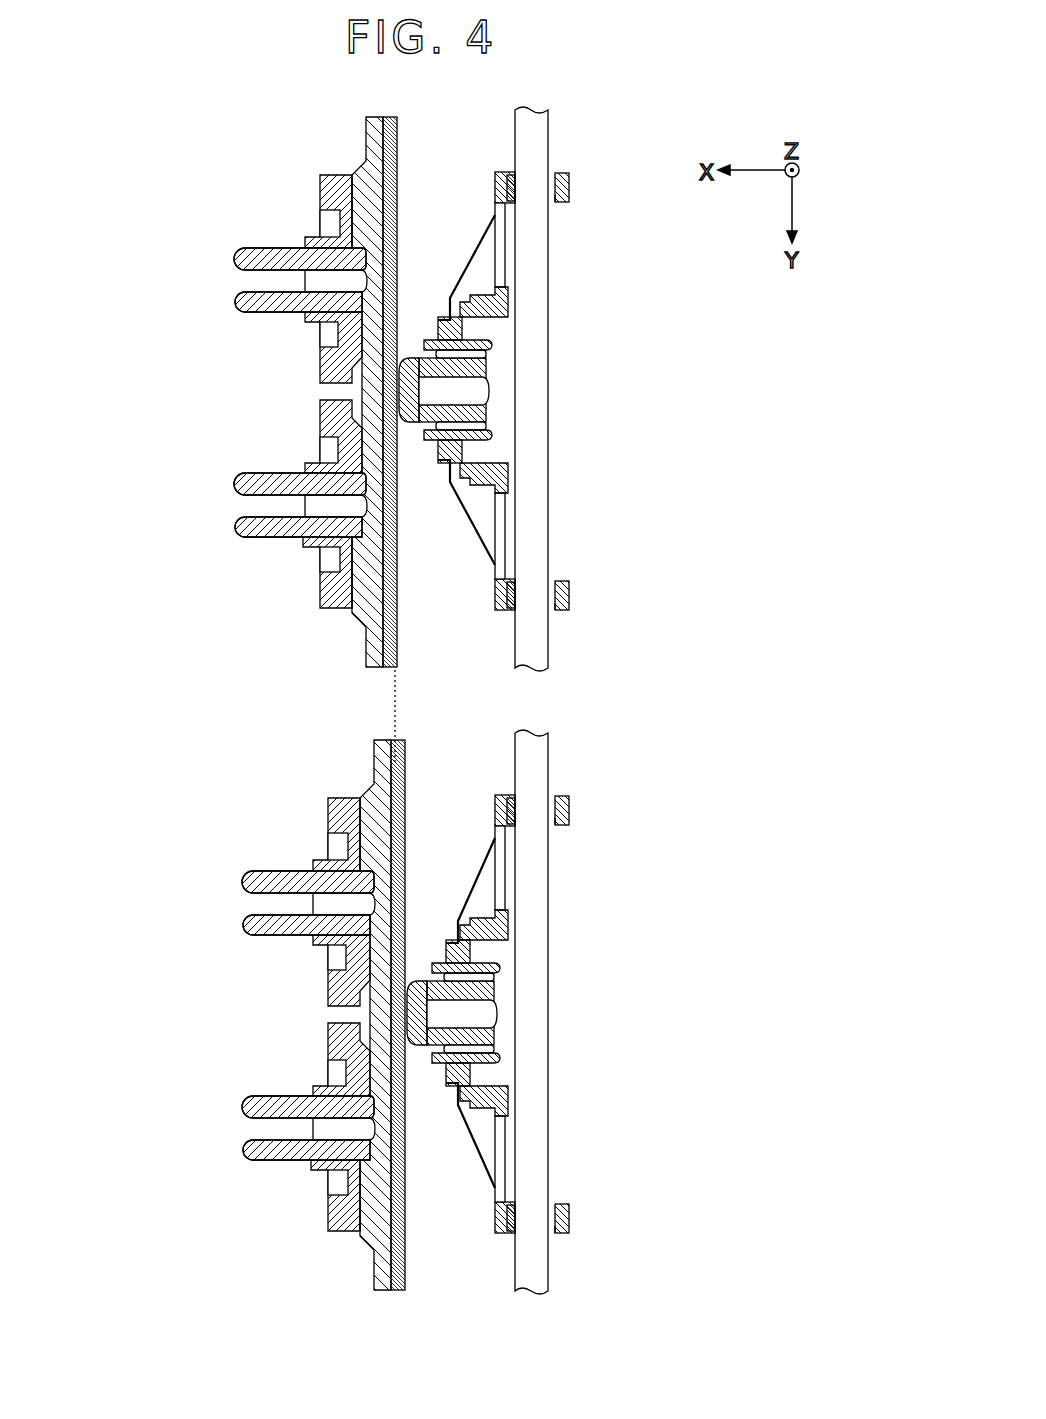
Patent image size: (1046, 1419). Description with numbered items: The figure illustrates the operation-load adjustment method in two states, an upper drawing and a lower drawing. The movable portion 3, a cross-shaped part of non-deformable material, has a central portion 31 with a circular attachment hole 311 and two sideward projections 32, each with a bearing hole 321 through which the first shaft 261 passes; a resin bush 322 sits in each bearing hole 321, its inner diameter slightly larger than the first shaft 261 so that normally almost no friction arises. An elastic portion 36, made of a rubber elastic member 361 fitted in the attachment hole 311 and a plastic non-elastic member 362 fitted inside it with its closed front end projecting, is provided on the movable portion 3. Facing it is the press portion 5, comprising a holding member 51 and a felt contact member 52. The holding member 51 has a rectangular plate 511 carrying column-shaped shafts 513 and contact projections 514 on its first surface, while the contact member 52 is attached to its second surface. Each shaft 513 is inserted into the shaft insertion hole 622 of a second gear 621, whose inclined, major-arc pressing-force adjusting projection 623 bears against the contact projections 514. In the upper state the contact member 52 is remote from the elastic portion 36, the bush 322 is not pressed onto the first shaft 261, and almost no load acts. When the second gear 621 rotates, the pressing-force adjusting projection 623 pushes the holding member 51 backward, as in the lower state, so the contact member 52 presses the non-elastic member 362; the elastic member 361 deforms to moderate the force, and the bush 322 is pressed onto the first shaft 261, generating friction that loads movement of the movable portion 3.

The movable portion 3 is at (610, 179).
The press portion 5 is at (256, 110).
The central portion 31 is at (478, 290).
The sideward projection 32 is at (498, 172).
The elastic portion 36 is at (490, 147).
The holding member 51 is at (318, 110).
The contact member 52 is at (400, 120).
The first shaft 261 is at (550, 112).
The attachment hole 311 is at (443, 450).
The bearing hole 321 is at (533, 192).
The bush 322 is at (562, 203).
The elastic member 361 is at (425, 345).
The non-elastic member 362 is at (410, 355).
The plate 511 is at (370, 118).
The shaft 513 is at (233, 258).
The contact projection 514 is at (335, 208).
The second gear 621 is at (320, 190).
The shaft insertion hole 622 is at (312, 310).
The pressing-force adjusting projection 623 is at (362, 178).